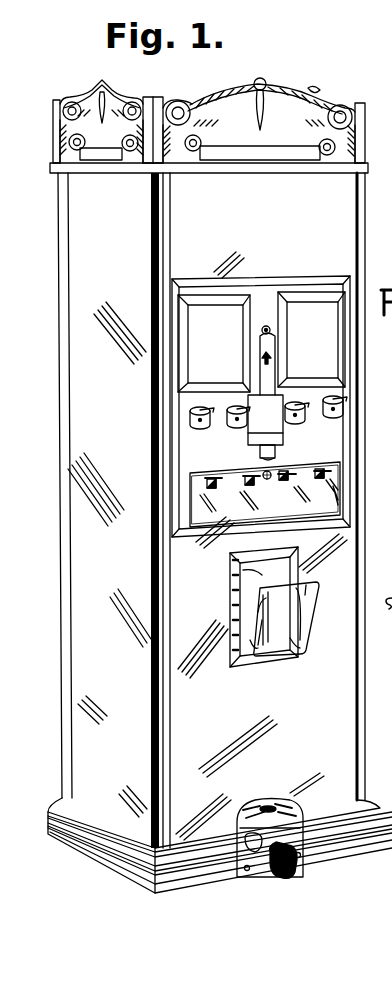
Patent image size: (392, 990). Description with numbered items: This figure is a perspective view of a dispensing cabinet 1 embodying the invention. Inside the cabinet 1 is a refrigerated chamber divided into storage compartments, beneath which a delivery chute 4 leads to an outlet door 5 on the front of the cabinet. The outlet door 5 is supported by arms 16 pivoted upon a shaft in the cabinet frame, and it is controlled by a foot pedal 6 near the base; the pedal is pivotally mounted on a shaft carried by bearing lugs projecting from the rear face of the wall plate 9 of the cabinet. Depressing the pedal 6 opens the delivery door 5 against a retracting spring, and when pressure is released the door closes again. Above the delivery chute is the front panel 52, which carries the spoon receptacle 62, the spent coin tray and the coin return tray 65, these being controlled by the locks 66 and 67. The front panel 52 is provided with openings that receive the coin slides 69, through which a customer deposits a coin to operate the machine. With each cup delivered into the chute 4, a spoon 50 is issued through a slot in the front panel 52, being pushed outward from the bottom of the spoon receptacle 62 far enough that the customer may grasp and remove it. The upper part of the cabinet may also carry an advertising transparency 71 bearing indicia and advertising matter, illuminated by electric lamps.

The cabinet 1 is at (220, 493).
The delivery chute 4 is at (258, 582).
The outlet door 5 is at (278, 635).
The foot pedal 6 is at (282, 878).
The wall plate 9 is at (272, 806).
The door supporting arms 16 is at (254, 652).
The spoon 50 is at (278, 454).
The front panel 52 is at (261, 488).
The spoon receptacle 62 is at (247, 406).
The coin return tray 65 is at (216, 487).
The lock 66 is at (266, 325).
The lock 67 is at (264, 470).
The coin slides 69 is at (234, 424).
The advertising transparency 71 is at (200, 306).